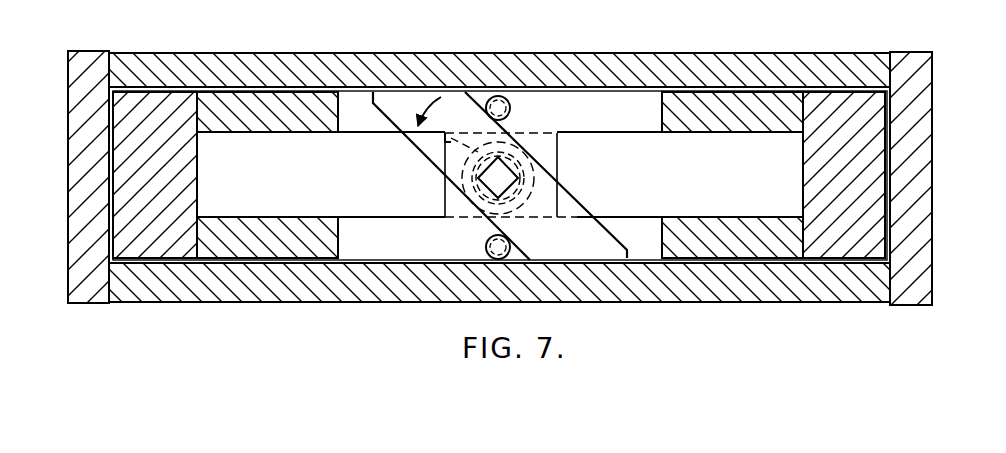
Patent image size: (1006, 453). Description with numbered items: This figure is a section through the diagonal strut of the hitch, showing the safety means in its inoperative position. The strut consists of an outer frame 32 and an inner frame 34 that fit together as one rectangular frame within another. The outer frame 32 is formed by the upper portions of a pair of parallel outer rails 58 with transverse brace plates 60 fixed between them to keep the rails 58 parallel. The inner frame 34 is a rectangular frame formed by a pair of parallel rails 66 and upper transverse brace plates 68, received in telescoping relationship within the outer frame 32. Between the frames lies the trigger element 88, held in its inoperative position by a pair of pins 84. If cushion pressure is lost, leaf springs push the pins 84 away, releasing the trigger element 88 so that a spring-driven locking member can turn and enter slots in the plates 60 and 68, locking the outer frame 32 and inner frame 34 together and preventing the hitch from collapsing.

The outer frame 32 is at (677, 64).
The inner frame 34 is at (716, 232).
The outer rails 58 is at (78, 126).
The transverse brace plates 60 is at (755, 55).
The rails 66 is at (135, 179).
The upper transverse brace plates 68 is at (268, 117).
The pins 84 is at (511, 108).
The trigger element 88 is at (568, 208).